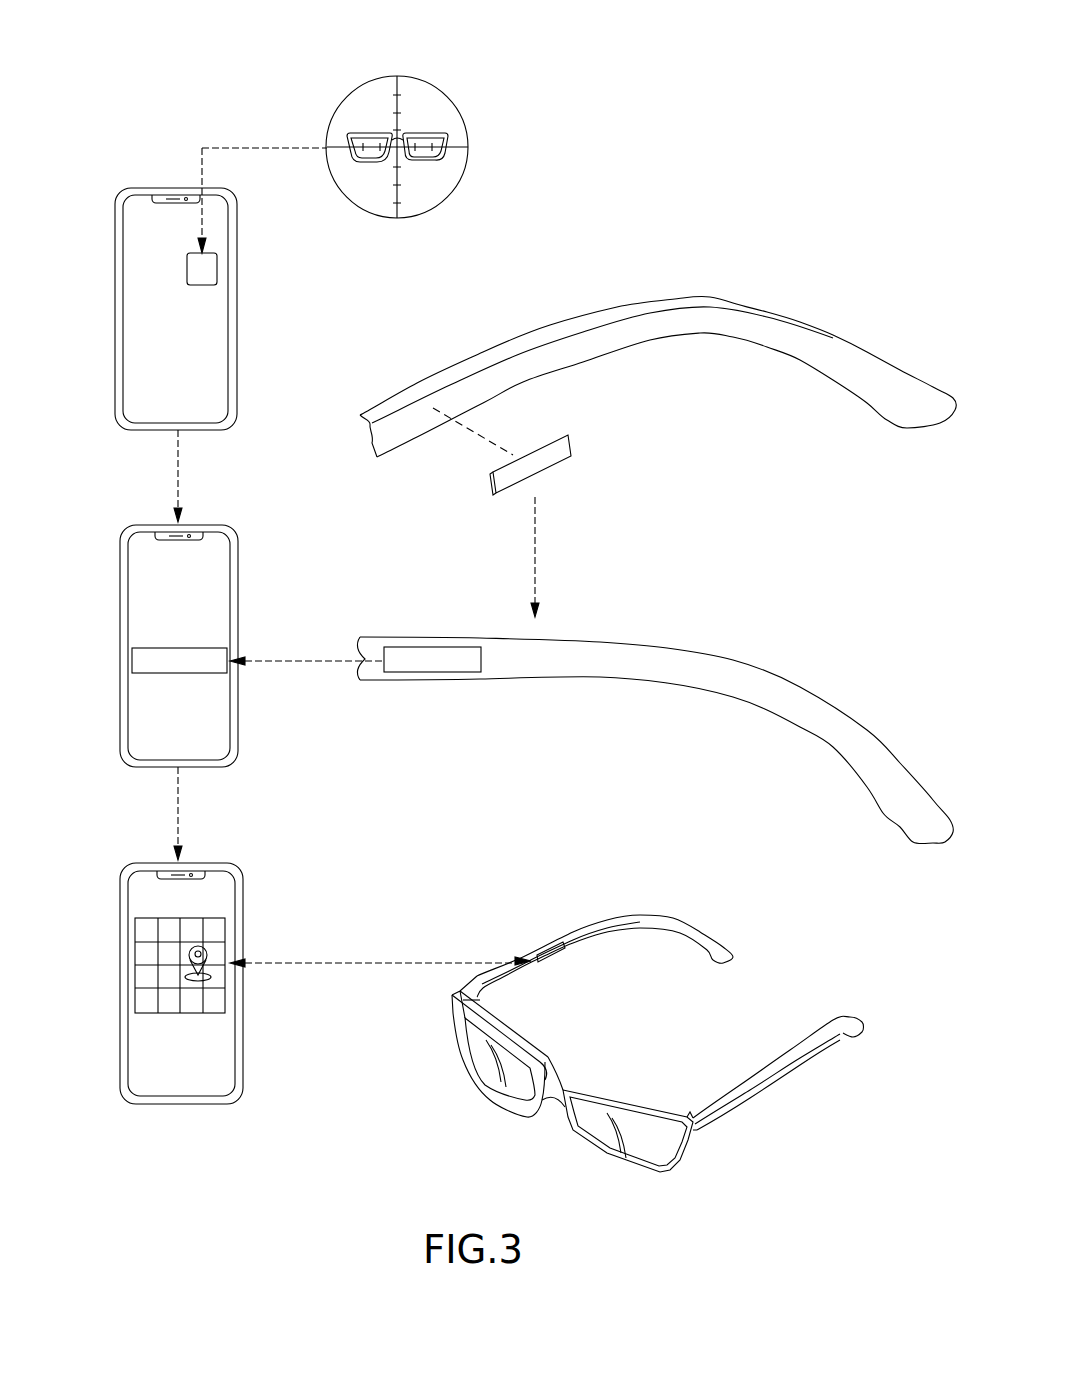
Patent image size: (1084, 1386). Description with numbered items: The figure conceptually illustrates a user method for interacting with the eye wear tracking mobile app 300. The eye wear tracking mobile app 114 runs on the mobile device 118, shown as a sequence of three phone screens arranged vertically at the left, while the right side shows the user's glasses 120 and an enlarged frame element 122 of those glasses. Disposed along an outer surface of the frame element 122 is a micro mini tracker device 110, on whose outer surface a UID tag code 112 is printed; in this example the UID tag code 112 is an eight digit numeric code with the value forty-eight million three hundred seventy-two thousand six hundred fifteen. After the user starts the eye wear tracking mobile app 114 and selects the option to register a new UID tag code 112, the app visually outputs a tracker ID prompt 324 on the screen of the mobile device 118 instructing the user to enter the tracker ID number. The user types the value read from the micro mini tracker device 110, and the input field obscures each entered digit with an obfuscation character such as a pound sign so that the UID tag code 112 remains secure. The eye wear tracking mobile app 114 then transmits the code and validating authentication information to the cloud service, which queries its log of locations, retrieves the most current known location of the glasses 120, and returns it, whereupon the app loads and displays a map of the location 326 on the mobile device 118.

The user method for interacting with the eye wear tracking mobile app 300 is at (812, 120).
The micro mini tracker device 110 is at (560, 433).
The UID tag code 112 is at (545, 467).
The eye wear tracking mobile app 114 is at (338, 108).
The mobile device 118 is at (118, 220).
The glasses 120 is at (452, 997).
The frame element 122 is at (451, 385).
The tracker ID prompt 324 is at (230, 580).
The map of the location 326 is at (235, 925).